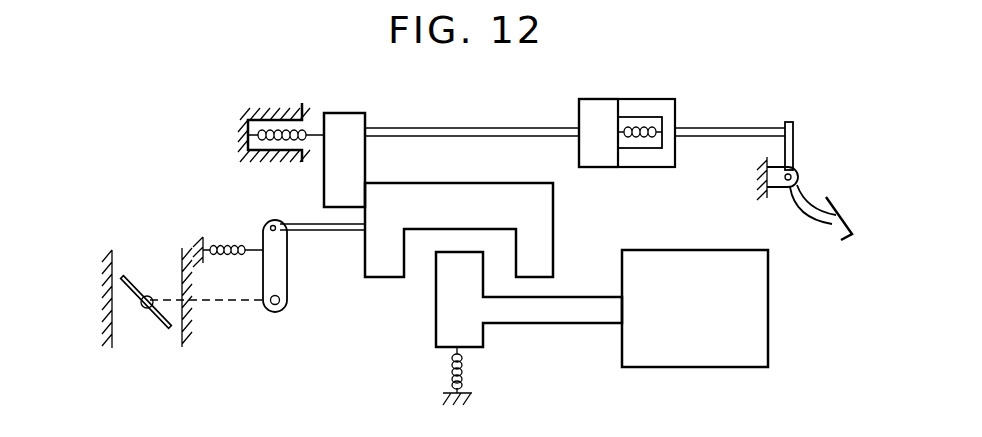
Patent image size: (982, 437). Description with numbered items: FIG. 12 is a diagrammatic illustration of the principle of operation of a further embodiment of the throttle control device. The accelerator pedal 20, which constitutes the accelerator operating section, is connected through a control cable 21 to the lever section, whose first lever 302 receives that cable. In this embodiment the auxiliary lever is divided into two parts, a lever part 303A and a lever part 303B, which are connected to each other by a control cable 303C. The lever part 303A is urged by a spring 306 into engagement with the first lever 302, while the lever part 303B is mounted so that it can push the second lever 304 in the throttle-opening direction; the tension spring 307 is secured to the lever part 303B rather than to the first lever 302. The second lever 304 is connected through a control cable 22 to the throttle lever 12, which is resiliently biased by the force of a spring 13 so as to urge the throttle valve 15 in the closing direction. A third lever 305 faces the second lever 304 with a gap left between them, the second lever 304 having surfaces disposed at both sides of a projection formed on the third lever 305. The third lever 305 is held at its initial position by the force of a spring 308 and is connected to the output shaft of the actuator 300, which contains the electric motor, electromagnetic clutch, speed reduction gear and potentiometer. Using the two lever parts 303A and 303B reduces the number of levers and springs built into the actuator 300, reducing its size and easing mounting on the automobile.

The throttle lever 12 is at (268, 222).
The spring 13 is at (228, 244).
The throttle valve 15 is at (160, 323).
The accelerator pedal 20 is at (794, 143).
The control cable 21 is at (723, 128).
The control cable 22 is at (335, 232).
The actuator 300 is at (705, 368).
The first lever 302 is at (691, 94).
The lever part 303A is at (611, 84).
The lever part 303B is at (354, 112).
The control cable 303C is at (457, 128).
The second lever 304 is at (555, 208).
The third lever 305 is at (435, 304).
The spring 306 is at (642, 140).
The tension spring 307 is at (307, 130).
The spring 308 is at (462, 372).